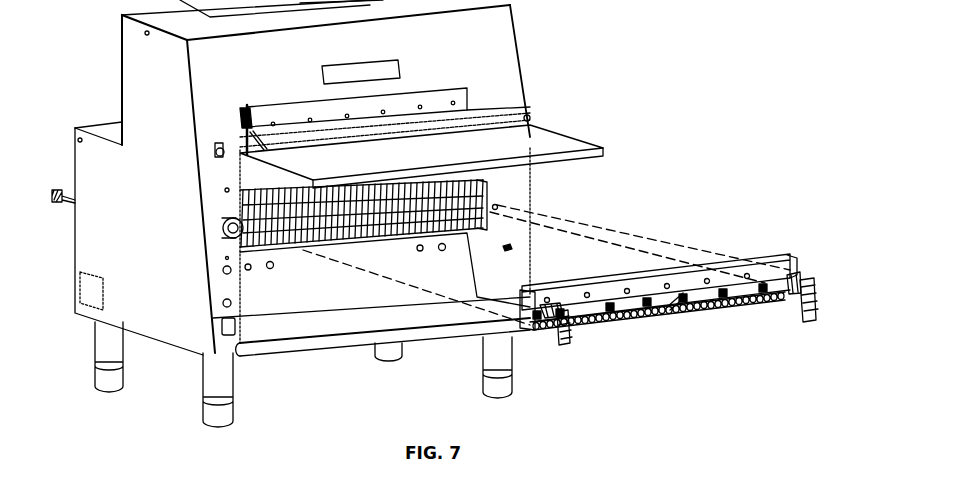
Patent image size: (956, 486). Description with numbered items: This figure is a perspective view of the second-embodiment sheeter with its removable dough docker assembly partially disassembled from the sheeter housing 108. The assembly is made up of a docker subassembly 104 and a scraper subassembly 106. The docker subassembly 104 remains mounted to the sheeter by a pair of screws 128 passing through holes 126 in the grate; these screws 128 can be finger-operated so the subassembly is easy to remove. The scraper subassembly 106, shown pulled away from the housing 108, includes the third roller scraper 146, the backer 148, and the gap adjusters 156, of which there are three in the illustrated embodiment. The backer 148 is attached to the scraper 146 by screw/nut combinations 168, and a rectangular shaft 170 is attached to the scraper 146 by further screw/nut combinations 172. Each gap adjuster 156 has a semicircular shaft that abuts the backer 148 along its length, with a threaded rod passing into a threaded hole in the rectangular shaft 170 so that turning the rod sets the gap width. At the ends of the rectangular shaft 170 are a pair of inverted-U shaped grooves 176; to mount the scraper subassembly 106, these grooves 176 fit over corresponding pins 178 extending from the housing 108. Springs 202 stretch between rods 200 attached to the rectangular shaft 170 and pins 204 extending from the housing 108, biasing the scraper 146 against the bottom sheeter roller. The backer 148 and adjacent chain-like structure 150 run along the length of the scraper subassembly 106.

The docker subassembly 104 is at (487, 187).
The scraper subassembly 106 is at (674, 289).
The sheeter housing 108 is at (522, 53).
The holes 126 is at (250, 269).
The screws 128 is at (274, 266).
The third roller scraper 146 is at (657, 268).
The backer 148 is at (692, 324).
The chain 150 is at (720, 318).
The gap adjuster 156 is at (567, 313).
The screw/nut combinations 168 is at (627, 291).
The rectangular shaft 170 is at (587, 306).
The screw/nut combinations 172 is at (723, 292).
The inverted-U shaped grooves 176 is at (517, 323).
The pins 178 is at (498, 207).
The rods 200 is at (547, 303).
The springs 202 is at (562, 340).
The pins 204 is at (510, 246).